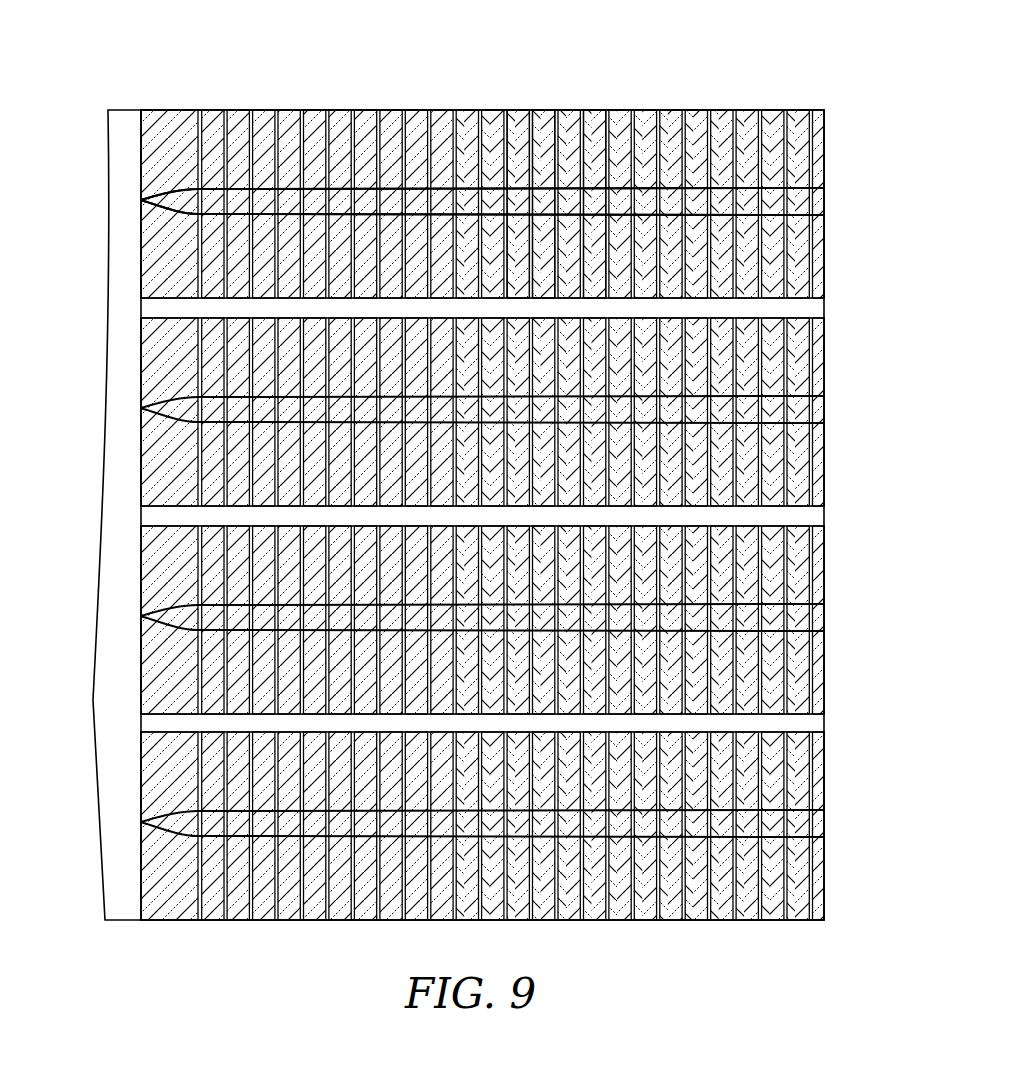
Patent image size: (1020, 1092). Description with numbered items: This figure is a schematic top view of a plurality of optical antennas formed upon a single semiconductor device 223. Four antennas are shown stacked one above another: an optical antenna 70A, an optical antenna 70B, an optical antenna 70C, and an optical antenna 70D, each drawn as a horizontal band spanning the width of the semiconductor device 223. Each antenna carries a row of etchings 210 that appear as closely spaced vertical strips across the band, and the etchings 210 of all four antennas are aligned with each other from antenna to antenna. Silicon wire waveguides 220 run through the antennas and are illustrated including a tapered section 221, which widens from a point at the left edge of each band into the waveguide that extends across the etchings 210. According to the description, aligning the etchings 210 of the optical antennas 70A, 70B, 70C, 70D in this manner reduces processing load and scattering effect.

The optical antenna 70A is at (153, 142).
The optical antenna 70B is at (155, 342).
The optical antenna 70C is at (155, 552).
The optical antenna 70D is at (155, 759).
The etchings 210 is at (578, 117).
The silicon wire waveguides 220 is at (818, 204).
The tapered section 221 is at (143, 200).
The single semiconductor device 223 is at (125, 252).